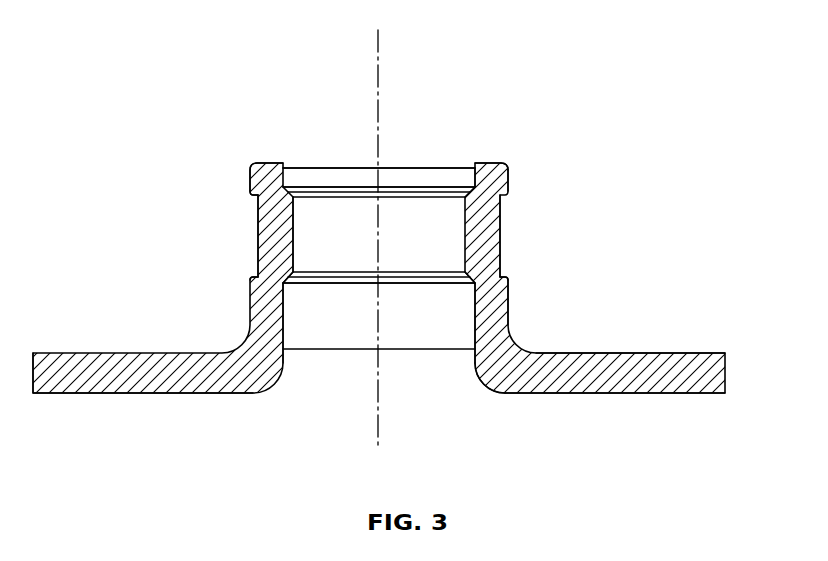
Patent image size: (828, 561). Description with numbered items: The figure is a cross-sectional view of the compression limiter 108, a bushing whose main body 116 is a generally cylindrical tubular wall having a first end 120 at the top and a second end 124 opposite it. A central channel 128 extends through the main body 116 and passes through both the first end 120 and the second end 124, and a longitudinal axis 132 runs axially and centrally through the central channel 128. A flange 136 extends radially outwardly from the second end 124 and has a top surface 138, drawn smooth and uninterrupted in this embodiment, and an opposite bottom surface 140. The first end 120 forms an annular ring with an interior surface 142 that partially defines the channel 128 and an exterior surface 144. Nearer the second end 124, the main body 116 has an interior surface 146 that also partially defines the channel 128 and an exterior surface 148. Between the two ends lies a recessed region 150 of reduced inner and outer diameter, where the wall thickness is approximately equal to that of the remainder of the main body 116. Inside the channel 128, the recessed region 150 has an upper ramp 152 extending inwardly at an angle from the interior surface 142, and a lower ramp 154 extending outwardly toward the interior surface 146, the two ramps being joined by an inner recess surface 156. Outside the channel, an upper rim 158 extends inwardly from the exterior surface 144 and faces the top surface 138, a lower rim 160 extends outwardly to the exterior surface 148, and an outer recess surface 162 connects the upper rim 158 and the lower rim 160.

The compression limiter 108 is at (250, 170).
The main body 116 is at (497, 303).
The first end 120 is at (487, 170).
The second end 124 is at (512, 375).
The central channel 128 is at (428, 150).
The longitudinal axis 132 is at (378, 40).
The flange 136 is at (123, 376).
The top surface 138 is at (690, 353).
The bottom surface 140 is at (675, 393).
The interior surface 142 is at (441, 173).
The exterior surface 144 is at (510, 180).
The interior surface 146 is at (403, 337).
The exterior surface 148 is at (508, 295).
The recessed region 150 is at (495, 237).
The upper ramp 152 is at (357, 190).
The lower ramp 154 is at (340, 280).
The inner recess surface 156 is at (318, 218).
The upper rim 158 is at (250, 192).
The lower rim 160 is at (250, 280).
The outer recess surface 162 is at (258, 234).